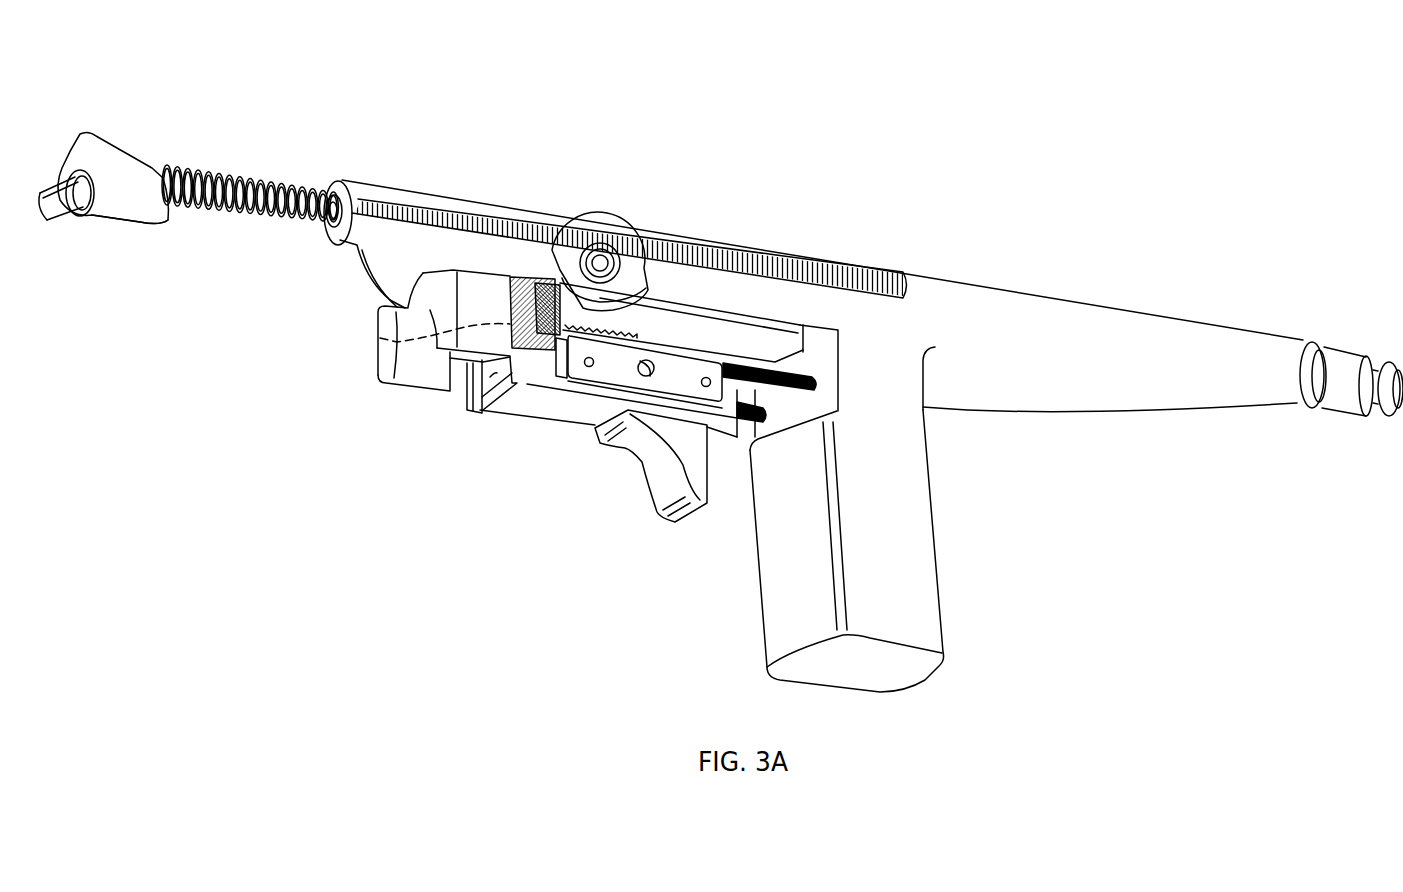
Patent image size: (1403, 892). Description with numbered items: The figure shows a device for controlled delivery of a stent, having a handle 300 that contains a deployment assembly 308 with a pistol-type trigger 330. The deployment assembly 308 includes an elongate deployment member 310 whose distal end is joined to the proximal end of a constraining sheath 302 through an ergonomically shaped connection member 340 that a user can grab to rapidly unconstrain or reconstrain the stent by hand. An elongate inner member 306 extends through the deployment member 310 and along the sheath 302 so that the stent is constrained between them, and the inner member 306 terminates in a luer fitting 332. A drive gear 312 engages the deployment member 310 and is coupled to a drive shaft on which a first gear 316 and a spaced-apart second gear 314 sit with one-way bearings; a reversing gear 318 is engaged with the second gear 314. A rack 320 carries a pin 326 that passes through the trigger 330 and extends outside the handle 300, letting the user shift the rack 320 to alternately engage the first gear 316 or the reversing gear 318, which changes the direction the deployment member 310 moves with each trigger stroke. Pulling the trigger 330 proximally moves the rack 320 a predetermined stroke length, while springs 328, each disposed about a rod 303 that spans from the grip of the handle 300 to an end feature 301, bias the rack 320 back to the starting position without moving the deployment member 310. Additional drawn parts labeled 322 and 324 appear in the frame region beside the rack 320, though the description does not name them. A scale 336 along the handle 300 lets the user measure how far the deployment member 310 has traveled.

The handle 300 is at (946, 280).
The end feature 301 is at (380, 362).
The constraining sheath 302 is at (58, 180).
The rod 303 is at (543, 348).
The inner member 306 is at (62, 218).
The deployment assembly 308 is at (445, 397).
The elongate deployment member 310 is at (227, 175).
The drive gear 312 is at (533, 278).
The second gear 314 is at (512, 276).
The first gear 316 is at (553, 280).
The reversing gear 318 is at (380, 338).
The rack 320 is at (487, 412).
The guide 322 is at (497, 382).
The mounting plate 324 is at (557, 378).
The pin 326 is at (650, 362).
The spring 328 is at (795, 350).
The trigger 330 is at (660, 518).
The luer fitting 332 is at (1347, 348).
The scale 336 is at (377, 178).
The connection member 340 is at (122, 218).